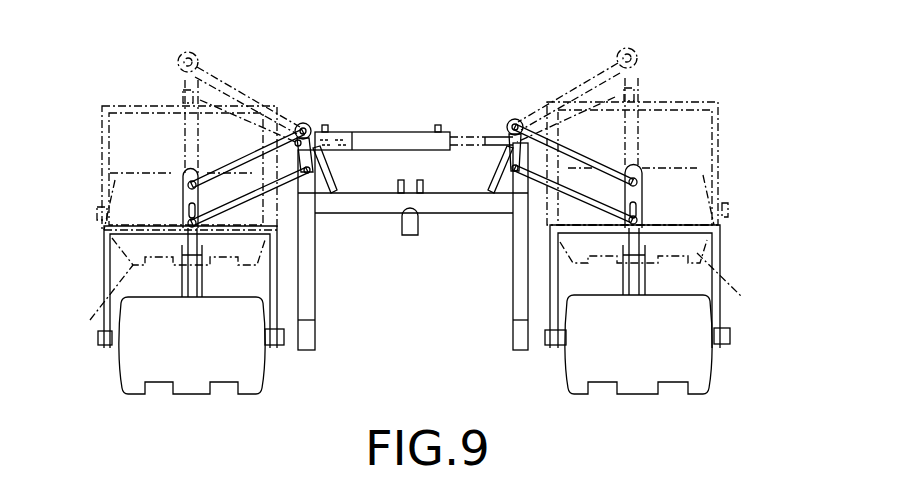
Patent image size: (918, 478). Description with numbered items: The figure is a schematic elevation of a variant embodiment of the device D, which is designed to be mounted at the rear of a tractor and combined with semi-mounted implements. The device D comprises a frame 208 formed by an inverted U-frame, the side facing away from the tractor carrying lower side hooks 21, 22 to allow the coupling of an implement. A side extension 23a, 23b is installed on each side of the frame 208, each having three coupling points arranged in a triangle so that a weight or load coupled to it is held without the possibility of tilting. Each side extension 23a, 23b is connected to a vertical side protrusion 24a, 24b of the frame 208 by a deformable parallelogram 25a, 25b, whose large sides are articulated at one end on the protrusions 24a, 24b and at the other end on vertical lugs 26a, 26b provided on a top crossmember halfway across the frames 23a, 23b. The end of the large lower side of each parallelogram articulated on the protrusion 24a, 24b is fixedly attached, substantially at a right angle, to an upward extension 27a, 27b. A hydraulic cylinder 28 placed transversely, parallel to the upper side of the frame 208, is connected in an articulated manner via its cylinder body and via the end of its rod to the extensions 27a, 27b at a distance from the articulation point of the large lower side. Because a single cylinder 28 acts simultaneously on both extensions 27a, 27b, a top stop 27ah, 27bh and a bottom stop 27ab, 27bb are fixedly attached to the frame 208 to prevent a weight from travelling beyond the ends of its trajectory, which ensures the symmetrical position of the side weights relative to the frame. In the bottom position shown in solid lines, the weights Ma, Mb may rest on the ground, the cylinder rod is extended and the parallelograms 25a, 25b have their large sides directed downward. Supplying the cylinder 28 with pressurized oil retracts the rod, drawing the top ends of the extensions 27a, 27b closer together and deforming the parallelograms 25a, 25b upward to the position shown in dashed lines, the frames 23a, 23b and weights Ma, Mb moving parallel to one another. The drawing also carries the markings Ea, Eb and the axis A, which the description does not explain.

The device D is at (100, 84).
The side extension 23a is at (97, 272).
The side extension 23b is at (729, 186).
The weight Ma is at (143, 333).
The weight Mb is at (683, 320).
The left roller axle end Ea is at (101, 357).
The right roller axle end Eb is at (733, 352).
The vertical lug 26a is at (183, 199).
The vertical lug 26b is at (635, 195).
The deformable parallelogram 25a is at (205, 173).
The deformable parallelogram 25b is at (597, 163).
The upward extension 27a is at (306, 123).
The upward extension 27b is at (512, 120).
The top stop 27ah is at (322, 185).
The top stop 27bh is at (496, 183).
The bottom stop 27ab is at (302, 182).
The bottom stop 27bb is at (524, 182).
The hydraulic cylinder 28 is at (396, 122).
The vertical side protrusion 24a is at (338, 162).
The vertical side protrusion 24b is at (480, 145).
The frame 208 is at (461, 226).
The axis A is at (373, 226).
The lower side hook 21 is at (312, 353).
The lower side hook 22 is at (524, 353).